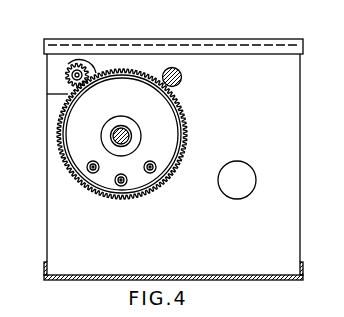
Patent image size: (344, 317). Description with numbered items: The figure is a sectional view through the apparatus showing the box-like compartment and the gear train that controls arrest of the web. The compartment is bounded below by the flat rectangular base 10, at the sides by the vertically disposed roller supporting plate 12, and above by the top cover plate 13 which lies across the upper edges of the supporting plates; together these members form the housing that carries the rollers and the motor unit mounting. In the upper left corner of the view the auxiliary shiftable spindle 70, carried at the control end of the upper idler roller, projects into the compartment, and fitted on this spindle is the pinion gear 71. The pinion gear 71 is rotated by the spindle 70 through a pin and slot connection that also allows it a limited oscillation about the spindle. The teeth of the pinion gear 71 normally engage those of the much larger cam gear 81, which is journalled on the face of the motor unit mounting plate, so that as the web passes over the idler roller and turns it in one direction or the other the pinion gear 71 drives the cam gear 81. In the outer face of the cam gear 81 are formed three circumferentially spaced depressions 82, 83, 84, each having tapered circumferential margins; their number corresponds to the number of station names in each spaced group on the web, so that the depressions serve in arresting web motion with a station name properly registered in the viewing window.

The base 10 is at (66, 281).
The roller supporting plate 12 is at (277, 88).
The top cover plate 13 is at (150, 26).
The auxiliary shiftable spindle 70 is at (70, 76).
The pinion gear 71 is at (86, 60).
The cam gear 81 is at (77, 117).
The depression 82 is at (92, 173).
The depression 83 is at (121, 186).
The depression 84 is at (152, 173).